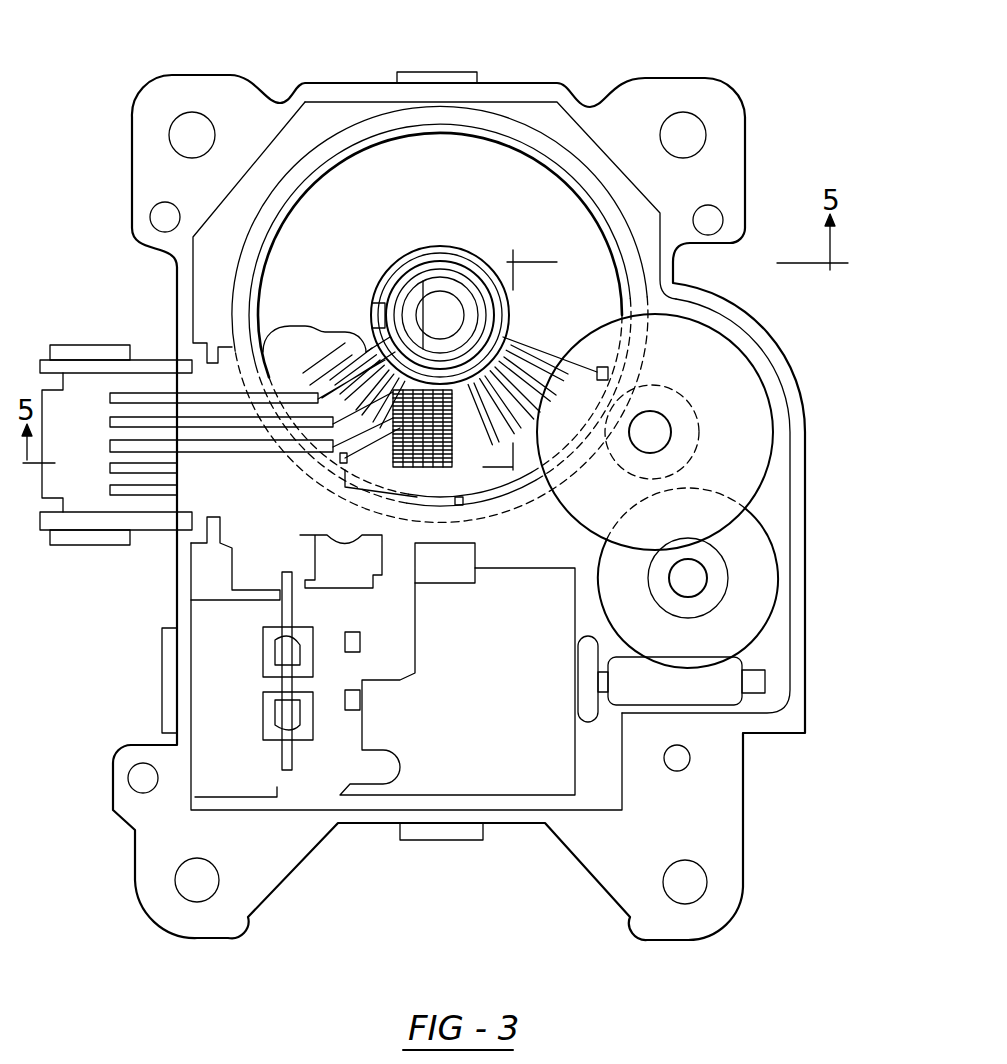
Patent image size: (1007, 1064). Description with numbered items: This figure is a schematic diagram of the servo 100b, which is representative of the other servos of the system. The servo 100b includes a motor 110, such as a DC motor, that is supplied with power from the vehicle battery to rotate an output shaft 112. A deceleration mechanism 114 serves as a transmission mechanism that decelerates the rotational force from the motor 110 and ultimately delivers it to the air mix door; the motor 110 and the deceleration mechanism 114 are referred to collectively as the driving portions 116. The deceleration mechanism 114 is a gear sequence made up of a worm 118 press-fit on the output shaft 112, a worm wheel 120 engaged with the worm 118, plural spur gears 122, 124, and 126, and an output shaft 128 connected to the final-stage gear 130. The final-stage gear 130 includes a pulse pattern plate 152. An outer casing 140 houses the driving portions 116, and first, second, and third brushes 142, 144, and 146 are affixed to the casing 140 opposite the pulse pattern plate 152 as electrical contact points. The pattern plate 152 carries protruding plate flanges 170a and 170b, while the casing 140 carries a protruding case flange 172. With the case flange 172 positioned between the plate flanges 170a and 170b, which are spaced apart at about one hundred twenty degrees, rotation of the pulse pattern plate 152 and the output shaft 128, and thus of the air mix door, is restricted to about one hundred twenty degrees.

The servo 100b is at (760, 124).
The motor 110 is at (455, 728).
The output shaft 112 is at (753, 682).
The deceleration mechanism 114 is at (765, 515).
The driving portions 116 is at (459, 506).
The worm 118 is at (705, 690).
The worm wheel 120 is at (753, 617).
The spur gear 122 is at (713, 575).
The spur gear 124 is at (730, 397).
The spur gear 126 is at (683, 397).
The output shaft 128 is at (438, 308).
The final-stage gear 130 is at (597, 222).
The outer casing 140 is at (177, 315).
The first brush 142 is at (335, 430).
The second brush 144 is at (345, 460).
The third brush 146 is at (338, 403).
The pulse pattern plate 152 is at (272, 221).
The plate flange 170a is at (270, 383).
The plate flange 170b is at (597, 370).
The case flange 172 is at (462, 503).